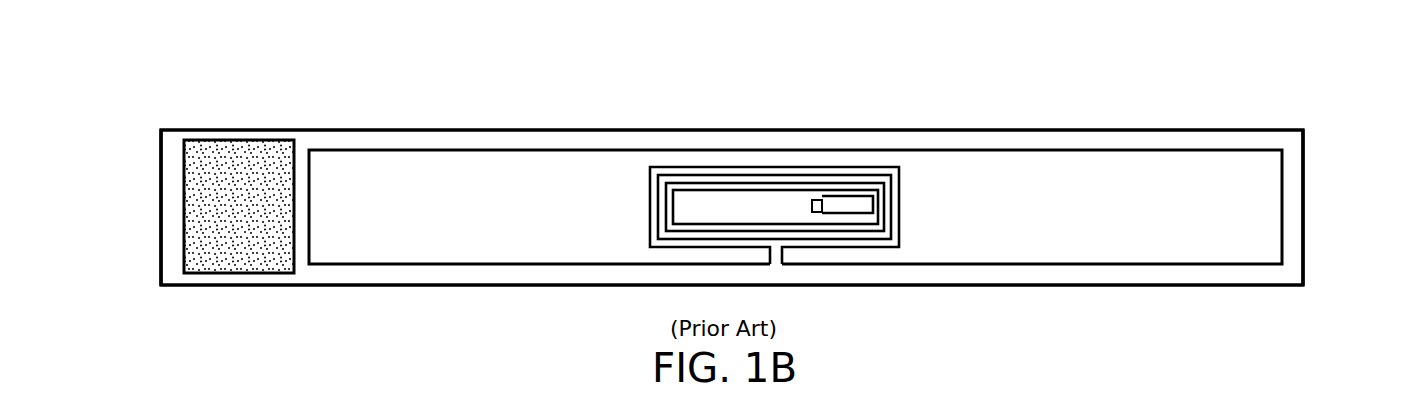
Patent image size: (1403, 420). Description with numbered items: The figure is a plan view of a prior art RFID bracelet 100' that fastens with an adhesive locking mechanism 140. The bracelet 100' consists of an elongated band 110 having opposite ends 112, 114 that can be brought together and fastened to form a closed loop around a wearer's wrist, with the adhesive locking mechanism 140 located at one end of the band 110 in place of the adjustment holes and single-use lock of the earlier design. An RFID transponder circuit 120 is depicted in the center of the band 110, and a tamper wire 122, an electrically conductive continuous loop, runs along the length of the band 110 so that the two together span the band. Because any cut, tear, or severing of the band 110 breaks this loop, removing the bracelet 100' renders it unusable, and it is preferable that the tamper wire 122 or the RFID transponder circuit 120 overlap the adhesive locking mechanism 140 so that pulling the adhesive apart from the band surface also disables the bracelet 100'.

The RFID bracelet 100' is at (732, 146).
The elongated band 110 is at (527, 129).
The opposite end 112 is at (1303, 206).
The opposite end 114 is at (161, 203).
The RFID transponder circuit 120 is at (812, 206).
The tamper wire 122 is at (529, 264).
The adhesive locking mechanism 140 is at (252, 273).